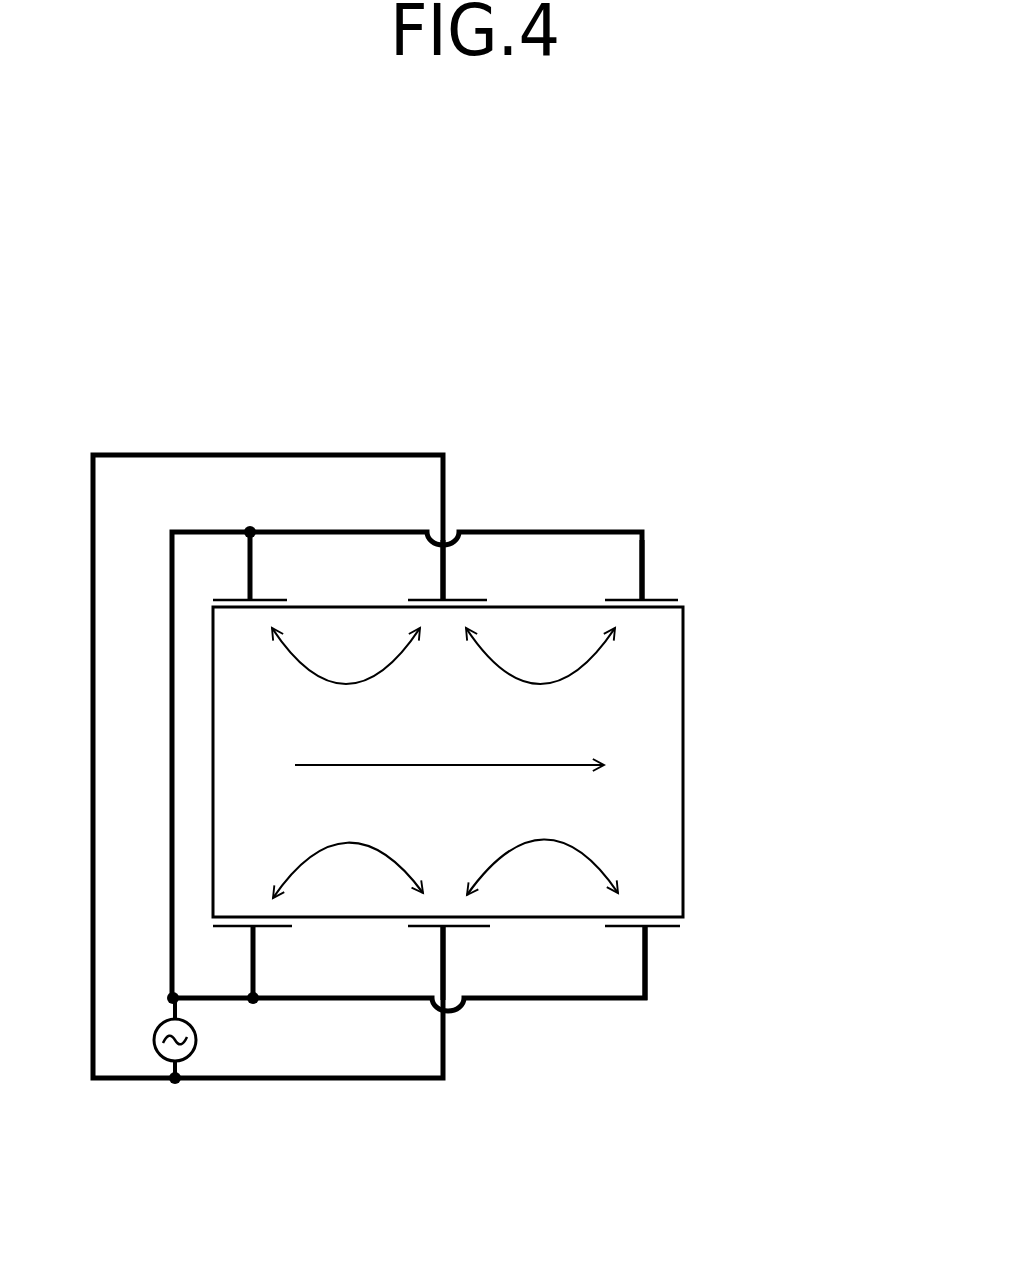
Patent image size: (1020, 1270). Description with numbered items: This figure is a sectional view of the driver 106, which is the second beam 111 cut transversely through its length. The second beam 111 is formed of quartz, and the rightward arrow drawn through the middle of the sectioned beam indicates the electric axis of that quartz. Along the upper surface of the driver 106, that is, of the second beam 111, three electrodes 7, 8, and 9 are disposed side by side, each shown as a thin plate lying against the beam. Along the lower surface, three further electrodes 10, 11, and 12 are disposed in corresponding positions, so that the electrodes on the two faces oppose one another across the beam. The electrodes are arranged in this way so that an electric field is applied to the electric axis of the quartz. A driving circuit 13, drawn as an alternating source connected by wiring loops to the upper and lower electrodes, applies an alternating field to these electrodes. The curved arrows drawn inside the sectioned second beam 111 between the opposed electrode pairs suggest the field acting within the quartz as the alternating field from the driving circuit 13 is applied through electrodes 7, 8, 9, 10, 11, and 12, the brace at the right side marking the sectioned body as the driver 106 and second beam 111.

The electrode 7 is at (268, 590).
The electrode 8 is at (462, 590).
The electrode 9 is at (660, 585).
The electrode 10 is at (267, 938).
The electrode 11 is at (467, 932).
The electrode 12 is at (663, 930).
The driving circuit 13 is at (155, 1055).
The driver 106 is at (551, 761).
The second beam 111 is at (703, 605).